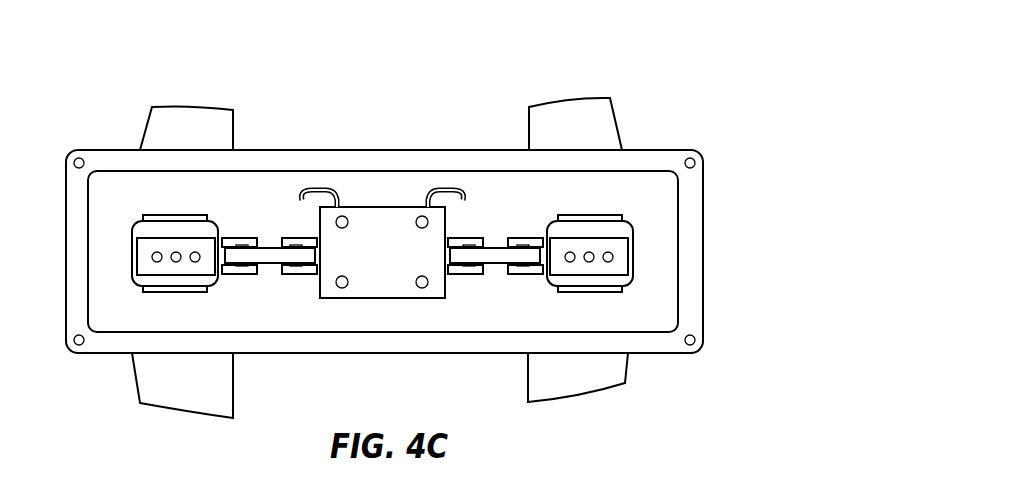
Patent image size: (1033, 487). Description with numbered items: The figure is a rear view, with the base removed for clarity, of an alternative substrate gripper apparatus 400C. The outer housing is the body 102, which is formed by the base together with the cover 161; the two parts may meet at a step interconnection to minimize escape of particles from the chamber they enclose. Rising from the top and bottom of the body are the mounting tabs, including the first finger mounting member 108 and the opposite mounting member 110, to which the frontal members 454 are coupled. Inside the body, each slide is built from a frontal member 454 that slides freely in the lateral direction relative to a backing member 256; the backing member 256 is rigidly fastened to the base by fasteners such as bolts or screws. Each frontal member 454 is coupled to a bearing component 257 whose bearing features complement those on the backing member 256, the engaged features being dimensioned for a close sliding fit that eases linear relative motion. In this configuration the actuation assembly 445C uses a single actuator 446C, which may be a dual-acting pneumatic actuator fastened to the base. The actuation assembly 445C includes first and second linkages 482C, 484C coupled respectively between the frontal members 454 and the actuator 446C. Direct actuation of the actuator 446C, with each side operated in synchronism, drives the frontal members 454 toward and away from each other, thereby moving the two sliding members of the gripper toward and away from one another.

The body 102 is at (110, 150).
The first finger mounting member 108 is at (582, 122).
The mounting tab 110 is at (220, 125).
The cover 161 is at (672, 148).
The backing member 256 is at (162, 237).
The bearing component 257 is at (178, 292).
The frontal member 454 is at (384, 251).
The substrate gripper apparatus 400C is at (575, 66).
The actuation assembly 445C is at (392, 137).
The actuator 446C is at (372, 298).
The first linkage 482C is at (495, 265).
The second linkage 484C is at (268, 265).